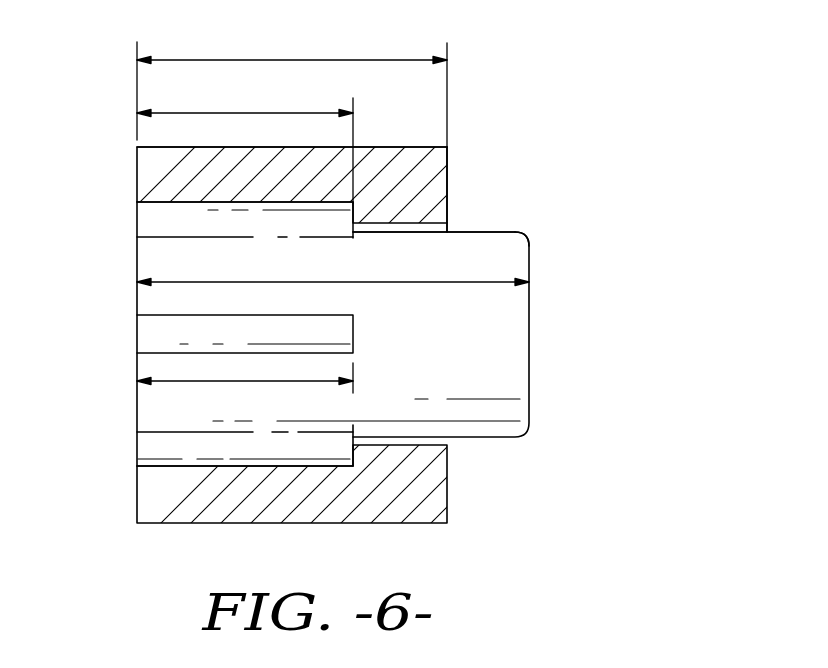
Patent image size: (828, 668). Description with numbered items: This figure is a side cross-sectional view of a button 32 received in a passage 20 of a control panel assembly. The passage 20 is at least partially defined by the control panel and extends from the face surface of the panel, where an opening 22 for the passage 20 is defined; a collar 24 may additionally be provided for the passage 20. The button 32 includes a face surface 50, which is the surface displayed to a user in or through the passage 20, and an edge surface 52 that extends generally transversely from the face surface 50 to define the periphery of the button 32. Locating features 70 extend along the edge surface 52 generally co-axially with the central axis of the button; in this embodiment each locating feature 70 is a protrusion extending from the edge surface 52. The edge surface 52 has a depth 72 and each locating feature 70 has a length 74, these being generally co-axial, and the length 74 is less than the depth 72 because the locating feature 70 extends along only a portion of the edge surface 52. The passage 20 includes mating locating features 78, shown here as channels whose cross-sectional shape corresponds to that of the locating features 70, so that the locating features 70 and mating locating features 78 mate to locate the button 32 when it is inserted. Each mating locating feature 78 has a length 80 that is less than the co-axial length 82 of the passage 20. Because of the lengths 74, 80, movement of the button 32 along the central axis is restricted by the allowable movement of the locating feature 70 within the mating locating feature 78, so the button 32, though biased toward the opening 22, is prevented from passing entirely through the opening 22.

The passage 20 is at (402, 223).
The opening 22 is at (453, 228).
The collar 24 is at (388, 147).
The button 32 is at (598, 245).
The face surface 50 is at (529, 360).
The edge surface 52 is at (498, 230).
The locating feature 70 is at (178, 220).
The depth 72 is at (400, 283).
The length 74 is at (223, 382).
The mating locating feature 78 is at (160, 203).
The length 80 is at (243, 112).
The length 82 is at (243, 59).